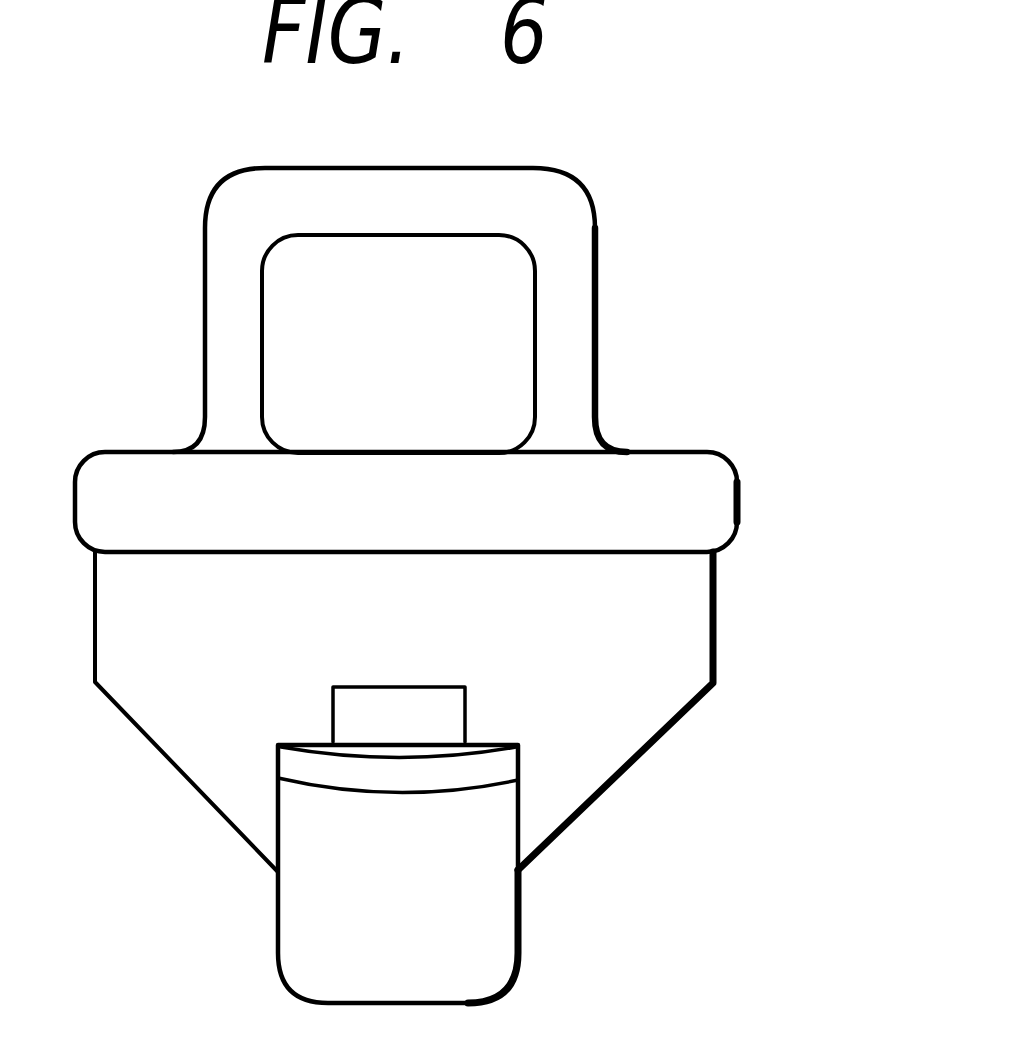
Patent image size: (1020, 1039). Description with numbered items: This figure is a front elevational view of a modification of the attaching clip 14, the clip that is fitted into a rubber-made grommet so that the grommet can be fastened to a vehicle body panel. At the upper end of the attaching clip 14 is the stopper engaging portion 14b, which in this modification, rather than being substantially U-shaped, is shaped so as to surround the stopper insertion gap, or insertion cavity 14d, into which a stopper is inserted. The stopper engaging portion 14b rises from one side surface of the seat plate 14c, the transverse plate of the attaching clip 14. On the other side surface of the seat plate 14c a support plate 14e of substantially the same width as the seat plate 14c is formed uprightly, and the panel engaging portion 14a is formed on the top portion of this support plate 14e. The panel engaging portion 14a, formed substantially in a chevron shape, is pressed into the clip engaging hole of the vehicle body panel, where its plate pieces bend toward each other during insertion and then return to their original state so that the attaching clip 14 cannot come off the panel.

The attaching clip 14 is at (770, 399).
The panel engaging portion 14a is at (515, 942).
The stopper engaging portion 14b is at (216, 277).
The seat plate 14c is at (717, 510).
The insertion cavity 14d is at (508, 312).
The support plate 14e is at (695, 653).